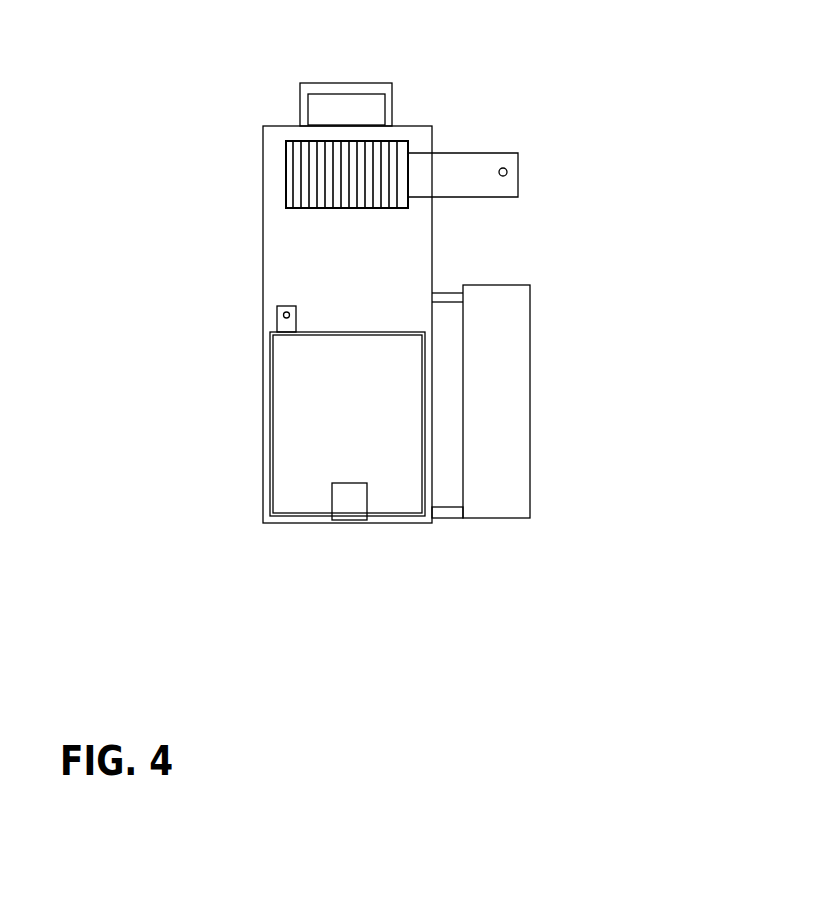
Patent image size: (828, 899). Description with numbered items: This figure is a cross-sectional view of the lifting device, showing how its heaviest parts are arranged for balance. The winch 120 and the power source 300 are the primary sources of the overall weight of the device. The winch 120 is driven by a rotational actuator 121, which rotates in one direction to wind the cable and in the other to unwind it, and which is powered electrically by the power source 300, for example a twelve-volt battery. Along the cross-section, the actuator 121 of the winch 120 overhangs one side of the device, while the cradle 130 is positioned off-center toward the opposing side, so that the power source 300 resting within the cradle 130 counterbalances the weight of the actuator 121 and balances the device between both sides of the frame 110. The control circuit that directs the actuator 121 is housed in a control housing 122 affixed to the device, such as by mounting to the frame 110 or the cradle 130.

The frame 110 is at (335, 86).
The winch 120 is at (510, 168).
The rotational actuator 121 is at (315, 170).
The control housing 122 is at (517, 360).
The cradle 130 is at (259, 295).
The power source 300 is at (314, 502).